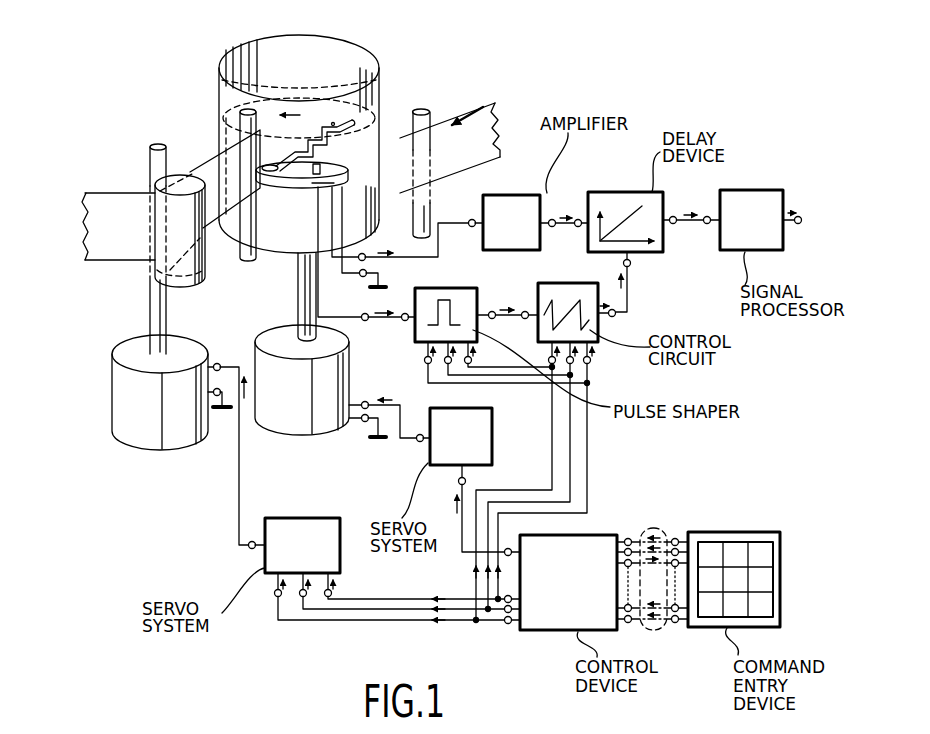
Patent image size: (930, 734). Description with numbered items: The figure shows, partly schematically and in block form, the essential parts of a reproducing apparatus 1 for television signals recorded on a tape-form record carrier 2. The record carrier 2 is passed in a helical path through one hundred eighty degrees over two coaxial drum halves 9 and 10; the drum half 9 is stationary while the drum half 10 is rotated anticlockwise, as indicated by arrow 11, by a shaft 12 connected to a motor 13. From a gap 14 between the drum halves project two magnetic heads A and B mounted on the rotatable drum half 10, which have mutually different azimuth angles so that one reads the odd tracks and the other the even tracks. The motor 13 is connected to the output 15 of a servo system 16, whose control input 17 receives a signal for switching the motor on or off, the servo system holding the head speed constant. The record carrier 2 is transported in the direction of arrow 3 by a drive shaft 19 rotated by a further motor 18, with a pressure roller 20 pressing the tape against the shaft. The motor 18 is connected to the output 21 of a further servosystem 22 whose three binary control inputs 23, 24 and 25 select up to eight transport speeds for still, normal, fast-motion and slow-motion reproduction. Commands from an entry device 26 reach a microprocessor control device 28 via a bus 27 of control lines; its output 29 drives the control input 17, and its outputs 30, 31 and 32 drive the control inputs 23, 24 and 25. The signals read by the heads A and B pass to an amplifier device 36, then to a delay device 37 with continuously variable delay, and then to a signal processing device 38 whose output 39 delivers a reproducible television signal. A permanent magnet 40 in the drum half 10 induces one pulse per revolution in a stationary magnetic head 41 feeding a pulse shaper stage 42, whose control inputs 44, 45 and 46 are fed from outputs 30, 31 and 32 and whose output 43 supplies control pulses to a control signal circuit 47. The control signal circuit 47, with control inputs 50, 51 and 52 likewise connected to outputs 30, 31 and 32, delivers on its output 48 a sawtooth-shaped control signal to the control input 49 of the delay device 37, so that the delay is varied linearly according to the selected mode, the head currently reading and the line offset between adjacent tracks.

The reproducing apparatus 1 is at (212, 94).
The record carrier 2 is at (497, 136).
The arrow 3 is at (467, 117).
The stationary drum half 9 is at (283, 240).
The rotatable drum half 10 is at (358, 65).
The arrow 11 is at (297, 108).
The shaft 12 is at (300, 296).
The motor 13 is at (275, 337).
The gap 14 is at (381, 155).
The output of servo system 15 is at (420, 442).
The servo system 16 is at (486, 450).
The control input of servo system 17 is at (458, 482).
The further motor 18 is at (177, 355).
The drive shaft 19 is at (150, 162).
The pressure roller 20 is at (172, 175).
The output of further servosystem 21 is at (252, 549).
The further servosystem 22 is at (300, 527).
The control input of further servosystem 23 is at (277, 595).
The control input of further servosystem 24 is at (303, 597).
The control input of further servosystem 25 is at (331, 593).
The entry device 26 is at (760, 514).
The bus of control lines 27 is at (652, 528).
The control device 28 is at (624, 517).
The output of control device 29 is at (508, 549).
The output of control device 30 is at (506, 601).
The output of control device 31 is at (507, 612).
The output of control device 32 is at (511, 623).
The amplifier device 36 is at (522, 203).
The delay device 37 is at (627, 202).
The signal processing device 38 is at (750, 202).
The output of signal processing device 39 is at (797, 224).
The permanent magnet 40 is at (310, 177).
The stationary magnetic head 41 is at (326, 186).
The pulse shaper stage 42 is at (458, 288).
The output of pulse shaper stage 43 is at (492, 311).
The control input of pulse shaper stage 44 is at (424, 360).
The control input of pulse shaper stage 45 is at (446, 364).
The control input of pulse shaper stage 46 is at (472, 360).
The control signal circuit 47 is at (563, 288).
The output of control signal circuit 48 is at (612, 317).
The control input of delay device 49 is at (631, 266).
The control input of control signal circuit 50 is at (548, 360).
The control input of control signal circuit 51 is at (572, 364).
The control input of control signal circuit 52 is at (591, 360).
The magnetic head A is at (286, 175).
The magnetic head B is at (333, 122).